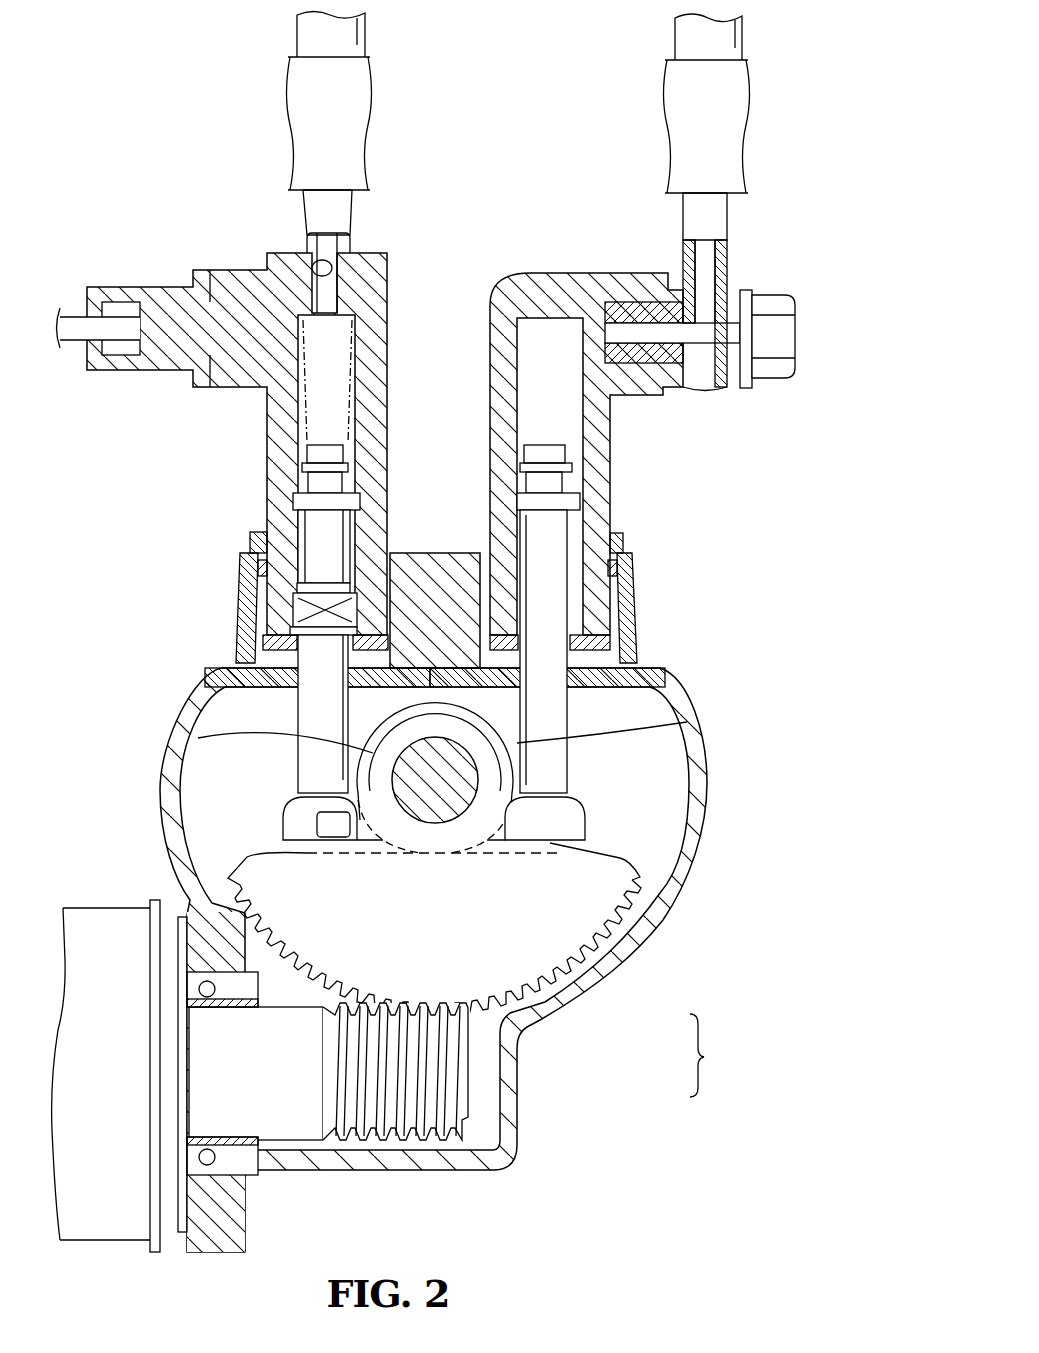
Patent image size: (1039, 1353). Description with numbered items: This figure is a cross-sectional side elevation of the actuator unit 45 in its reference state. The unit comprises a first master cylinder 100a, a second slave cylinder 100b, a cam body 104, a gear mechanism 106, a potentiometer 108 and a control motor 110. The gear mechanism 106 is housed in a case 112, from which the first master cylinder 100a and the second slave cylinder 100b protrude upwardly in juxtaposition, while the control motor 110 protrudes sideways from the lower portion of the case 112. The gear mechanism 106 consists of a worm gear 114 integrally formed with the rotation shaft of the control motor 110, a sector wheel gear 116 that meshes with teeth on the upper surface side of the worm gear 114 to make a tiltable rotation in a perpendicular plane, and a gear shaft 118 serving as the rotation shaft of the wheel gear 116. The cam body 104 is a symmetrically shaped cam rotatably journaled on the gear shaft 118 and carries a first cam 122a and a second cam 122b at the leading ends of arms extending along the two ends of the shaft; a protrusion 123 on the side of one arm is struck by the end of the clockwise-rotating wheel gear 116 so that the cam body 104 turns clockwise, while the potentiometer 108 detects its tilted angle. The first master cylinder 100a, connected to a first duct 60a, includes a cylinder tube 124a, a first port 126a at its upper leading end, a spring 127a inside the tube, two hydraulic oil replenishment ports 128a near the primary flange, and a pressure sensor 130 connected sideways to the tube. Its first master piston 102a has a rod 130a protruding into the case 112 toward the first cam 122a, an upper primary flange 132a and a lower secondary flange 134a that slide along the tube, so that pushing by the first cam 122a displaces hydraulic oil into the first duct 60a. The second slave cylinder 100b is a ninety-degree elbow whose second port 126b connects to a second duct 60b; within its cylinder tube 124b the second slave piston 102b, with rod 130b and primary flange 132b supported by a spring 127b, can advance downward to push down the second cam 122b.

The actuator unit 45 is at (753, 470).
The first duct 60a is at (362, 27).
The second duct 60b is at (742, 33).
The first master cylinder 100a is at (250, 540).
The second slave cylinder 100b is at (615, 537).
The first master piston 102a is at (205, 672).
The second slave piston 102b is at (668, 690).
The cam body 104 is at (583, 813).
The gear mechanism 106 is at (719, 1055).
The potentiometer 108 is at (685, 730).
The control motor 110 is at (82, 1222).
The case 112 is at (700, 805).
The worm gear 114 is at (470, 1063).
The sector wheel gear 116 is at (547, 943).
The gear shaft 118 is at (198, 738).
The first cam 122a is at (303, 838).
The second cam 122b is at (553, 833).
The protrusion 123 is at (333, 820).
The cylinder tube 124a is at (382, 387).
The cylinder tube 124b is at (496, 352).
The first port 126a is at (305, 247).
The second port 126b is at (644, 318).
The spring 127a is at (262, 427).
The spring 127b is at (627, 590).
The hydraulic oil replenishment ports 128a is at (268, 517).
The pressure sensor 130 is at (178, 302).
The rod 130a is at (313, 767).
The rod 130b is at (572, 762).
The upper primary flange 132a is at (350, 507).
The primary flange 132b is at (583, 518).
The lower secondary flange 134a is at (317, 712).